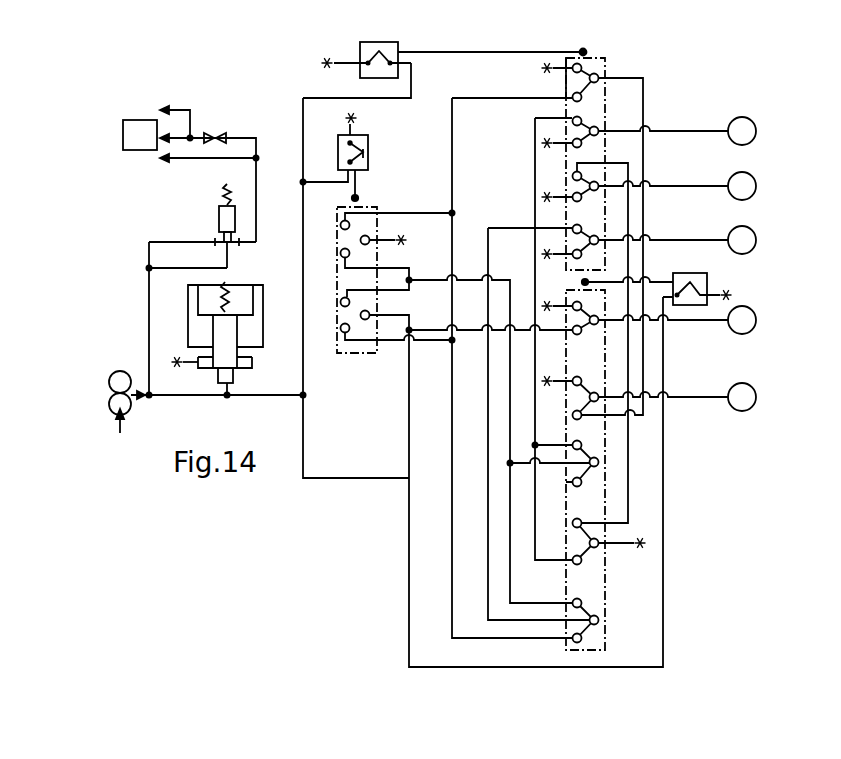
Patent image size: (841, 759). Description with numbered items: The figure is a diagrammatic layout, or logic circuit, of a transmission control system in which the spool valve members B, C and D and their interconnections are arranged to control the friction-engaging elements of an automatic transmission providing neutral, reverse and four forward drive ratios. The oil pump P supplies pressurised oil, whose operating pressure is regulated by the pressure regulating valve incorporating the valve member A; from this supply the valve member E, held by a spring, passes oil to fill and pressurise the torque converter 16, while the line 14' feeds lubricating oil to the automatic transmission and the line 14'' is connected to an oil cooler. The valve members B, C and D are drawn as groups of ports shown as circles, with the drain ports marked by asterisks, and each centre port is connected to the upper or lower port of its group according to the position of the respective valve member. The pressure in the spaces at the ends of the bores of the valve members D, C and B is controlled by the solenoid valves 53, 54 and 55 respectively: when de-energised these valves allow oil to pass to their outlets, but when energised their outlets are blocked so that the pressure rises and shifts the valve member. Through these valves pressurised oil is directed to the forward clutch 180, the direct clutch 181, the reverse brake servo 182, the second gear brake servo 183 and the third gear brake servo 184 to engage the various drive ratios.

The lubricating oil feed line 14' is at (209, 178).
The oil cooler line 14'' is at (189, 108).
The torque converter 16 is at (150, 146).
The solenoid valve 53 is at (698, 272).
The solenoid valve 54 is at (388, 41).
The solenoid valve 55 is at (369, 153).
The forward clutch 180 is at (742, 320).
The direct clutch 181 is at (742, 240).
The reverse brake servo 182 is at (742, 131).
The second gear brake servo 183 is at (742, 186).
The third gear brake servo 184 is at (742, 397).
The pressure regulating valve member A is at (208, 406).
The spool valve member B is at (354, 367).
The spool valve member C is at (656, 110).
The spool valve member D is at (681, 501).
The spool valve member E is at (203, 227).
The oil pump P is at (120, 416).